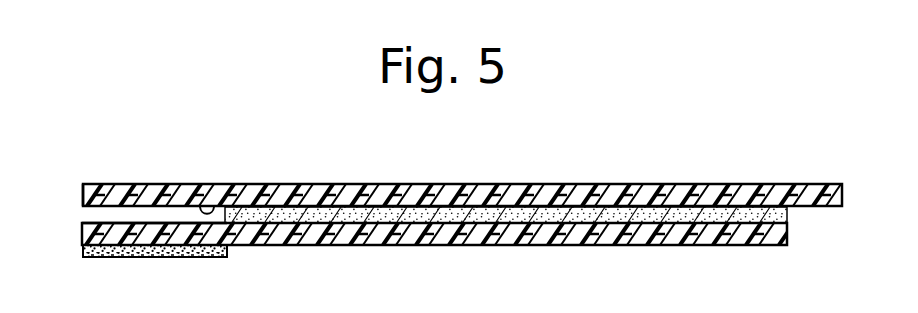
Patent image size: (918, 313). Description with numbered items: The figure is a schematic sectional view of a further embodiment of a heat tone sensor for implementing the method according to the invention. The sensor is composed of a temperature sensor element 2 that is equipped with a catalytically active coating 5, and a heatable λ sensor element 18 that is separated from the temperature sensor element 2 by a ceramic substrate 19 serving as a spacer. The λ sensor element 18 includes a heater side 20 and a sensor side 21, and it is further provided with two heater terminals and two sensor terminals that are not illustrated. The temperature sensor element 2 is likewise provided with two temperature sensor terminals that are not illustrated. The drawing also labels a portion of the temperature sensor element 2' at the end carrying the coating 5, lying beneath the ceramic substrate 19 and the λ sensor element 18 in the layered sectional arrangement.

The heatable λ sensor element 18 is at (83, 190).
The heater side 20 is at (152, 184).
The sensor side 21 is at (212, 210).
The ceramic substrate 19 is at (588, 212).
The temperature sensor element 2 is at (434, 260).
The lower plate end portion 2' is at (154, 266).
The catalytically active coating 5 is at (103, 257).